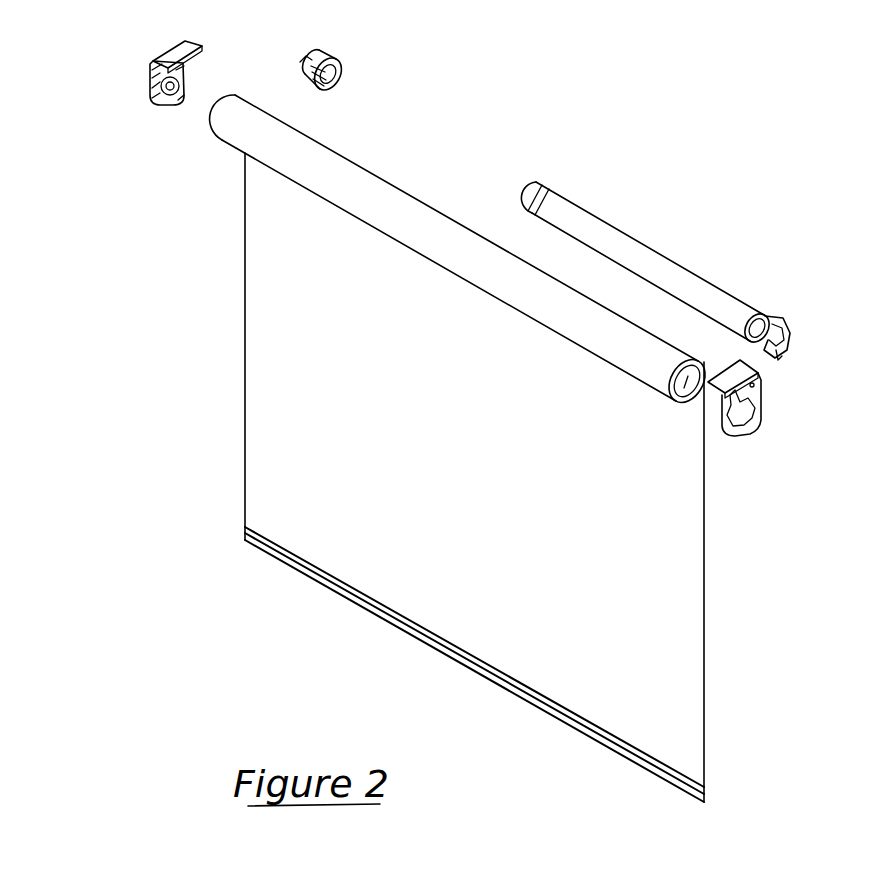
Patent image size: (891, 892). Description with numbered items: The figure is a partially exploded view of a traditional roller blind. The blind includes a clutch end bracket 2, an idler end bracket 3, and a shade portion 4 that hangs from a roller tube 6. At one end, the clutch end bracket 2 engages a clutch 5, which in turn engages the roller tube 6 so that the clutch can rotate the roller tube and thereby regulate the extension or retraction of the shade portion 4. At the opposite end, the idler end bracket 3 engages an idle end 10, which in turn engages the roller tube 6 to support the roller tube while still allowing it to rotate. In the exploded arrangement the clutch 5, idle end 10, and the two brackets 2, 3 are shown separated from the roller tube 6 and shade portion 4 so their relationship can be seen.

The clutch end bracket 2 is at (747, 437).
The idler end bracket 3 is at (150, 75).
The shade portion 4 is at (497, 421).
The clutch 5 is at (790, 328).
The roller tube 6 is at (680, 396).
The idle end 10 is at (317, 55).